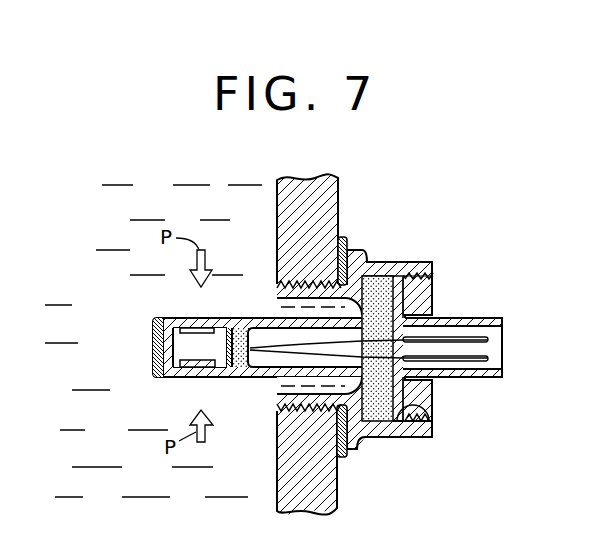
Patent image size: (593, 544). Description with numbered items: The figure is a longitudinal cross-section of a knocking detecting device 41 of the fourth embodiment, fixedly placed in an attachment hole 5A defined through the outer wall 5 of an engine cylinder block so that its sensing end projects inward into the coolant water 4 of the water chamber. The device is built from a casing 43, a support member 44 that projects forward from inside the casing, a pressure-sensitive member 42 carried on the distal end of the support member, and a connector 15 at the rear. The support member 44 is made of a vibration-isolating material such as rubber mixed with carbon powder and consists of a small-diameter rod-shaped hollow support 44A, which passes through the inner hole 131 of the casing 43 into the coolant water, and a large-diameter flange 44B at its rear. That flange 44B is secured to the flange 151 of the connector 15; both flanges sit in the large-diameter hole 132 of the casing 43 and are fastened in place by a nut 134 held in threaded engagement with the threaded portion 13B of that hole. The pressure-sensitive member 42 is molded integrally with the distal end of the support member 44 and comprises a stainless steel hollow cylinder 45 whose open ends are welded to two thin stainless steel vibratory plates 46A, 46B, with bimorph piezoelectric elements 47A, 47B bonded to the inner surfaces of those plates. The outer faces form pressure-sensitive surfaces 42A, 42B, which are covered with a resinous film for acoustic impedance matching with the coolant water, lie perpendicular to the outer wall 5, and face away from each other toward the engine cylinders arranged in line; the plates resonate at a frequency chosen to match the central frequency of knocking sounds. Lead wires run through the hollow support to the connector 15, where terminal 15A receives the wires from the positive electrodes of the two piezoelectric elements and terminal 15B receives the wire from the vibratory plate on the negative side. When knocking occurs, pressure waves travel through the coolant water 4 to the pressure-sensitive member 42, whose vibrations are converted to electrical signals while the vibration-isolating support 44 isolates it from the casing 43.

The coolant water 4 is at (157, 187).
The outer wall 5 is at (304, 215).
The attachment hole 5A is at (269, 316).
The knocking detecting device 41 is at (447, 266).
The casing 43 is at (382, 270).
The large-diameter hole 132 is at (406, 275).
The inner hole 131 is at (279, 405).
The connector 15 is at (482, 318).
The terminal 15A is at (500, 340).
The terminal 15B is at (500, 357).
The pressure-sensitive member 42 is at (154, 317).
The pressure-sensitive surface 42A is at (195, 318).
The pressure-sensitive surface 42B is at (186, 378).
The support member 44 is at (268, 316).
The small-diameter rod-shaped hollow support 44A is at (260, 378).
The large-diameter flange 44B is at (378, 396).
The vibratory plate 46A is at (157, 323).
The vibratory plate 46B is at (160, 378).
The bimorph piezoelectric element 47A is at (179, 333).
The bimorph piezoelectric element 47B is at (170, 374).
The hollow cylinder 45 is at (176, 353).
The nut 134 is at (412, 396).
The flange 151 is at (429, 419).
The threaded portion 13B is at (422, 437).